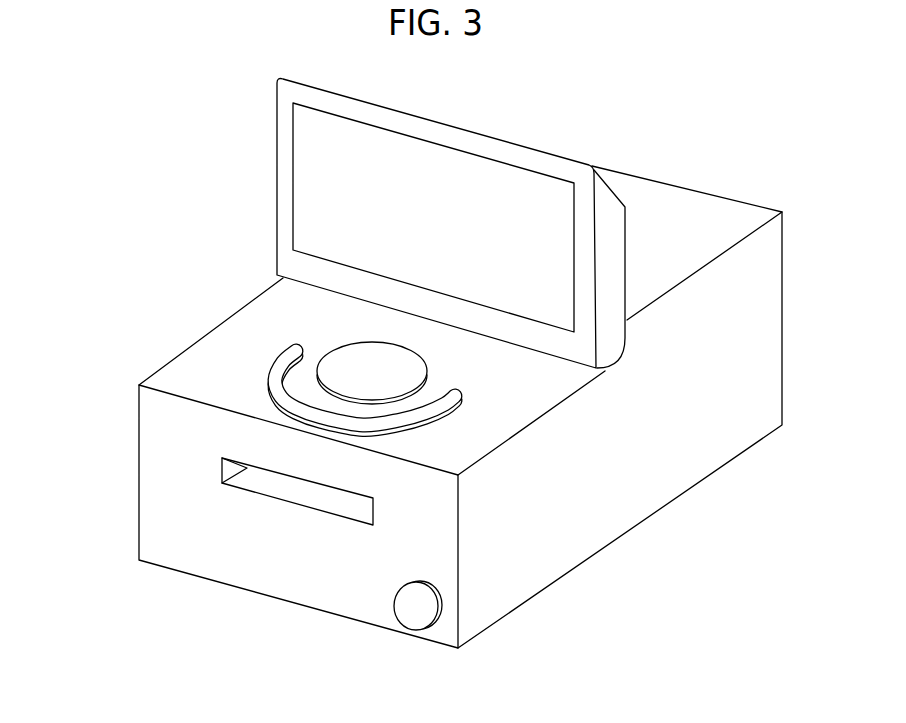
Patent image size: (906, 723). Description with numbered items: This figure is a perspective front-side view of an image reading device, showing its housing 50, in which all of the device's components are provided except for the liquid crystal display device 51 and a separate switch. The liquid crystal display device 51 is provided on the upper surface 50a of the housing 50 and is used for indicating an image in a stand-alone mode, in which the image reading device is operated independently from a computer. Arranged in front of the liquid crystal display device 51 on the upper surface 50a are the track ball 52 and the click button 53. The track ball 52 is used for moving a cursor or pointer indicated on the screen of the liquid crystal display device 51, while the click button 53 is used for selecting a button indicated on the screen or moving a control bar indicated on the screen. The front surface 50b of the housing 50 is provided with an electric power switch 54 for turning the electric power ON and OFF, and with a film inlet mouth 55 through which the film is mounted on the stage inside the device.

The housing 50 is at (650, 520).
The upper surface 50a is at (173, 378).
The front surface 50b is at (162, 513).
The liquid crystal display device 51 is at (285, 130).
The track ball 52 is at (345, 362).
The click button 53 is at (275, 375).
The electric power switch 54 is at (417, 615).
The film inlet mouth 55 is at (247, 477).